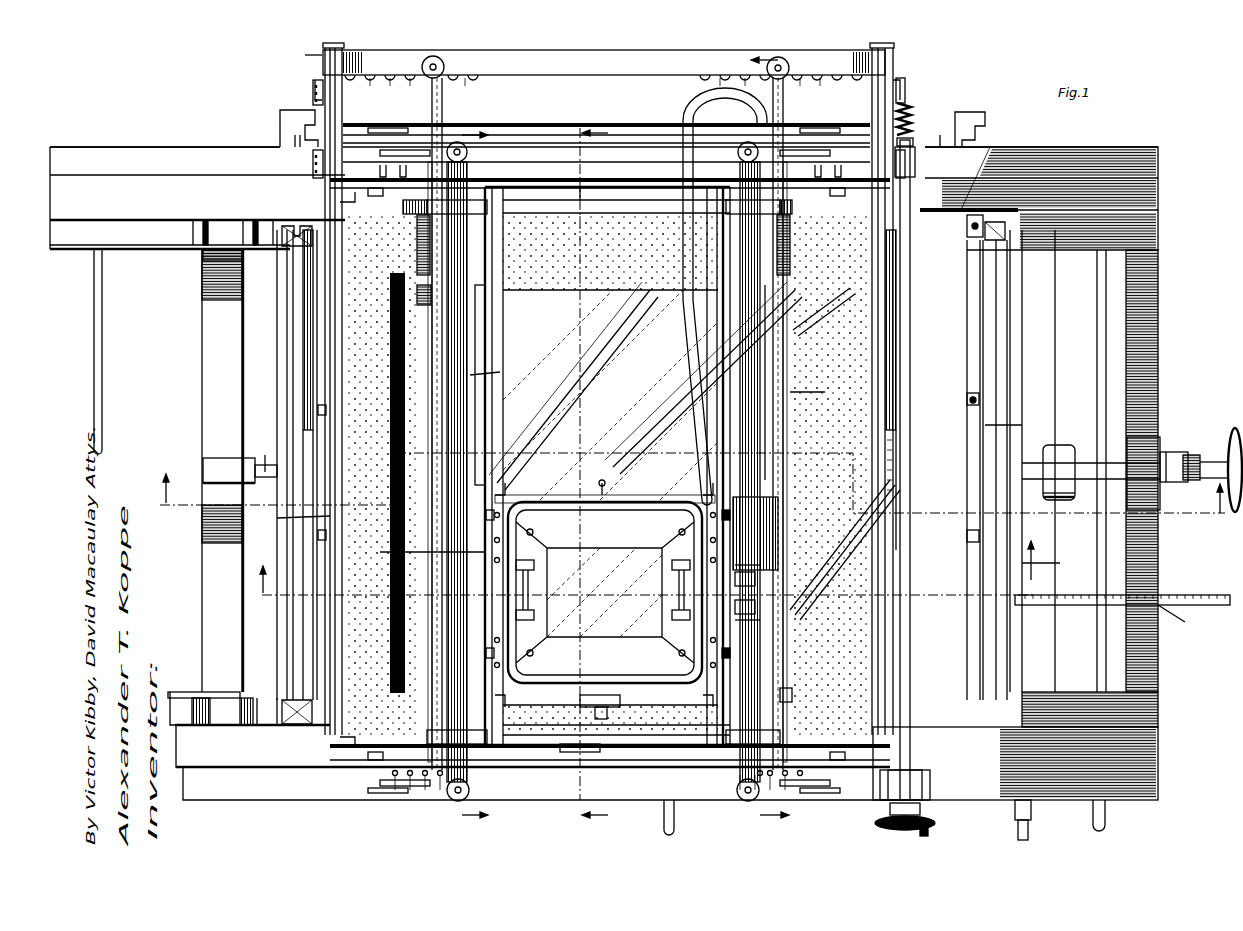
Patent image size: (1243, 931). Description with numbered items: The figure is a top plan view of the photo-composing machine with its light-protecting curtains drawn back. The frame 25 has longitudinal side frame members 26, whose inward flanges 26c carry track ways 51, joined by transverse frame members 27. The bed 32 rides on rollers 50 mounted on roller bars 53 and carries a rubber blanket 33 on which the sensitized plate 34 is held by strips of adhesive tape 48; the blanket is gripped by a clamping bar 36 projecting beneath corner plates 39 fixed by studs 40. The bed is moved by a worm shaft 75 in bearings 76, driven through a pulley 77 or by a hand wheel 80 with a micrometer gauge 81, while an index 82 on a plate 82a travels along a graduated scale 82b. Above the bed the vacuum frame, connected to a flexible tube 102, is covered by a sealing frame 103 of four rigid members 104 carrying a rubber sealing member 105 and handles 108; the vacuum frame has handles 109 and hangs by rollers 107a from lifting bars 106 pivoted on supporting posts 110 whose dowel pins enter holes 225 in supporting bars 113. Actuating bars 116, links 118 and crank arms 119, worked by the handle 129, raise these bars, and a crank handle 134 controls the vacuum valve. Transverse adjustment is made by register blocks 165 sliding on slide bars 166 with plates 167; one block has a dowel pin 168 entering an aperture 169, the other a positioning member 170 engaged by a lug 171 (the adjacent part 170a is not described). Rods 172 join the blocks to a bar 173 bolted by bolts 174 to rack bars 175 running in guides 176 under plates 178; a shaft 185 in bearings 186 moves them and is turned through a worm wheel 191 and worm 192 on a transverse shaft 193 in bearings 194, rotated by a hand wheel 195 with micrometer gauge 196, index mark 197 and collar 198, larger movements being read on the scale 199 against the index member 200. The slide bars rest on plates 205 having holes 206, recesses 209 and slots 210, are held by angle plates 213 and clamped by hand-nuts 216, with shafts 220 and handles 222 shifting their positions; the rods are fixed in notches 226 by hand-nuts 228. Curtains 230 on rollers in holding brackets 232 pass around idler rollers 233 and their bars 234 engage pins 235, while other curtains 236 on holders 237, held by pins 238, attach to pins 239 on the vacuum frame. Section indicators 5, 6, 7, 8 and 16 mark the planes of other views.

The section line 5- 5 is at (757, 443).
The section line 6- 6 is at (691, 502).
The section line 7- 7 is at (645, 560).
The section line 8- 8 is at (600, 476).
The section line 16- 16 is at (484, 476).
The frame 25 is at (1181, 621).
The longitudinal side frame members 26 is at (130, 185).
The horizontal flanges 26c is at (140, 212).
The transverse frame members 27 is at (203, 583).
The bed 32 is at (320, 636).
The rubber blanket 33 is at (531, 471).
The sensitized plate 34 is at (610, 395).
The lower clamping bar 36 is at (1035, 425).
The plates 39 is at (318, 408).
The studs 40 is at (980, 403).
The strips of adhesive tape 48 is at (440, 355).
The rollers 50 is at (245, 228).
The track ways 51 is at (92, 228).
The longitudinal roller bars 53 is at (190, 260).
The worm shaft 75 is at (1090, 470).
The bearings 76 is at (215, 465).
The pulley 77 is at (1075, 450).
The hand wheel 80 is at (1235, 428).
The micrometer gauge 81 is at (1192, 455).
The stationary index mark 82 is at (1188, 450).
The plate 82a is at (1046, 562).
The graduated scale 82b is at (1040, 606).
The flexible tube 102 is at (680, 110).
The upper sealing frame 103 is at (572, 520).
The rigid members 104 is at (632, 520).
The rubber sealing member 105 is at (682, 528).
The lifting bars 106 is at (490, 392).
The rollers 107a is at (728, 515).
The handles 108 is at (640, 615).
The handles 109 is at (672, 586).
The supporting posts 110 is at (462, 175).
The supporting bars 113 is at (345, 185).
The actuating bars 116 is at (340, 198).
The links 118 is at (372, 195).
The crank arm 119 is at (595, 205).
The handle 129 is at (664, 828).
The crank handle 134 is at (1040, 830).
The register blocks 165 is at (485, 660).
The slide bars 166 is at (500, 335).
The plates 167 is at (661, 383).
The dowel pin 168 is at (417, 552).
The aperture 169 is at (600, 480).
The positioning member 170 is at (760, 565).
The latch bar 170a is at (395, 532).
The lug 171 is at (600, 710).
The rods 172 is at (478, 95).
The longitudinally extending bar 173 is at (582, 78).
The bolts 174 is at (295, 53).
The rack bars 175 is at (322, 66).
The guides 176 is at (320, 85).
The plates 178 is at (312, 84).
The longitudinal shaft 185 is at (595, 128).
The bearings 186 is at (282, 112).
The worm wheel 191 is at (912, 100).
The worm 192 is at (913, 110).
The transverse shaft 193 is at (930, 752).
The bearings 194 is at (915, 150).
The hand wheel 195 is at (935, 823).
The micrometer gauge 196 is at (920, 808).
The index mark 197 is at (930, 778).
The collar 198 is at (790, 790).
The graduated scale 199 is at (885, 410).
The index member 200 is at (792, 690).
The longitudinal plates 205 is at (213, 160).
The spaced holes 206 is at (832, 790).
The recesses 209 is at (400, 168).
The longitudinal slots 210 is at (418, 150).
The angle plates 213 is at (380, 128).
The hand-nuts 216 is at (436, 80).
The shafts 220 is at (102, 330).
The handles 222 is at (1105, 818).
The holes 225 is at (495, 190).
The notches 226 is at (405, 84).
The hand-nuts 228 is at (445, 80).
The curtains 230 is at (303, 370).
The holding brackets 232 is at (300, 232).
The idler rollers 233 is at (290, 355).
The bars 234 is at (303, 395).
The pins 235 is at (418, 238).
The curtains 236 is at (428, 207).
The holders 237 is at (568, 190).
The pins 238 is at (410, 715).
The pins 239 is at (500, 478).